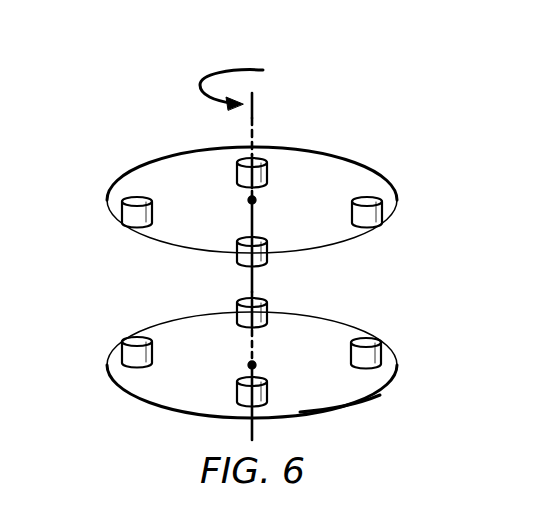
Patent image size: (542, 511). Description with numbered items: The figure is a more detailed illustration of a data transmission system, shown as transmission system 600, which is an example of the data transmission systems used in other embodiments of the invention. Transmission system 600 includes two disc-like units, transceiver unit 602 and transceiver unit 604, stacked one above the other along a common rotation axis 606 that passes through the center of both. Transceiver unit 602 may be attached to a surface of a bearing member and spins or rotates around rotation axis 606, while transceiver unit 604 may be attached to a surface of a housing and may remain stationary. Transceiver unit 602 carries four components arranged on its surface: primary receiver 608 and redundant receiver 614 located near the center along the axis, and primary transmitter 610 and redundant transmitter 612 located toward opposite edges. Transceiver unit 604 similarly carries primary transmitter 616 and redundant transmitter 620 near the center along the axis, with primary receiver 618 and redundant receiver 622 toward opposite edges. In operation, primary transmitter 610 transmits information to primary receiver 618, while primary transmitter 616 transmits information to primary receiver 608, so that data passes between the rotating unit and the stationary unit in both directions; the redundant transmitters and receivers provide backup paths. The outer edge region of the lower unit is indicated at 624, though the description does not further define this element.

The transmission system 600 is at (307, 70).
The transceiver unit 602 is at (107, 200).
The transceiver unit 604 is at (107, 365).
The rotation axis 606 is at (254, 115).
The primary receiver 608 is at (268, 173).
The primary transmitter 610 is at (130, 229).
The redundant transmitter 612 is at (374, 229).
The redundant receiver 614 is at (236, 258).
The primary transmitter 616 is at (268, 393).
The primary receiver 618 is at (130, 338).
The redundant transmitter 620 is at (268, 311).
The redundant receiver 622 is at (374, 340).
The edge of lower disc 624 is at (350, 410).